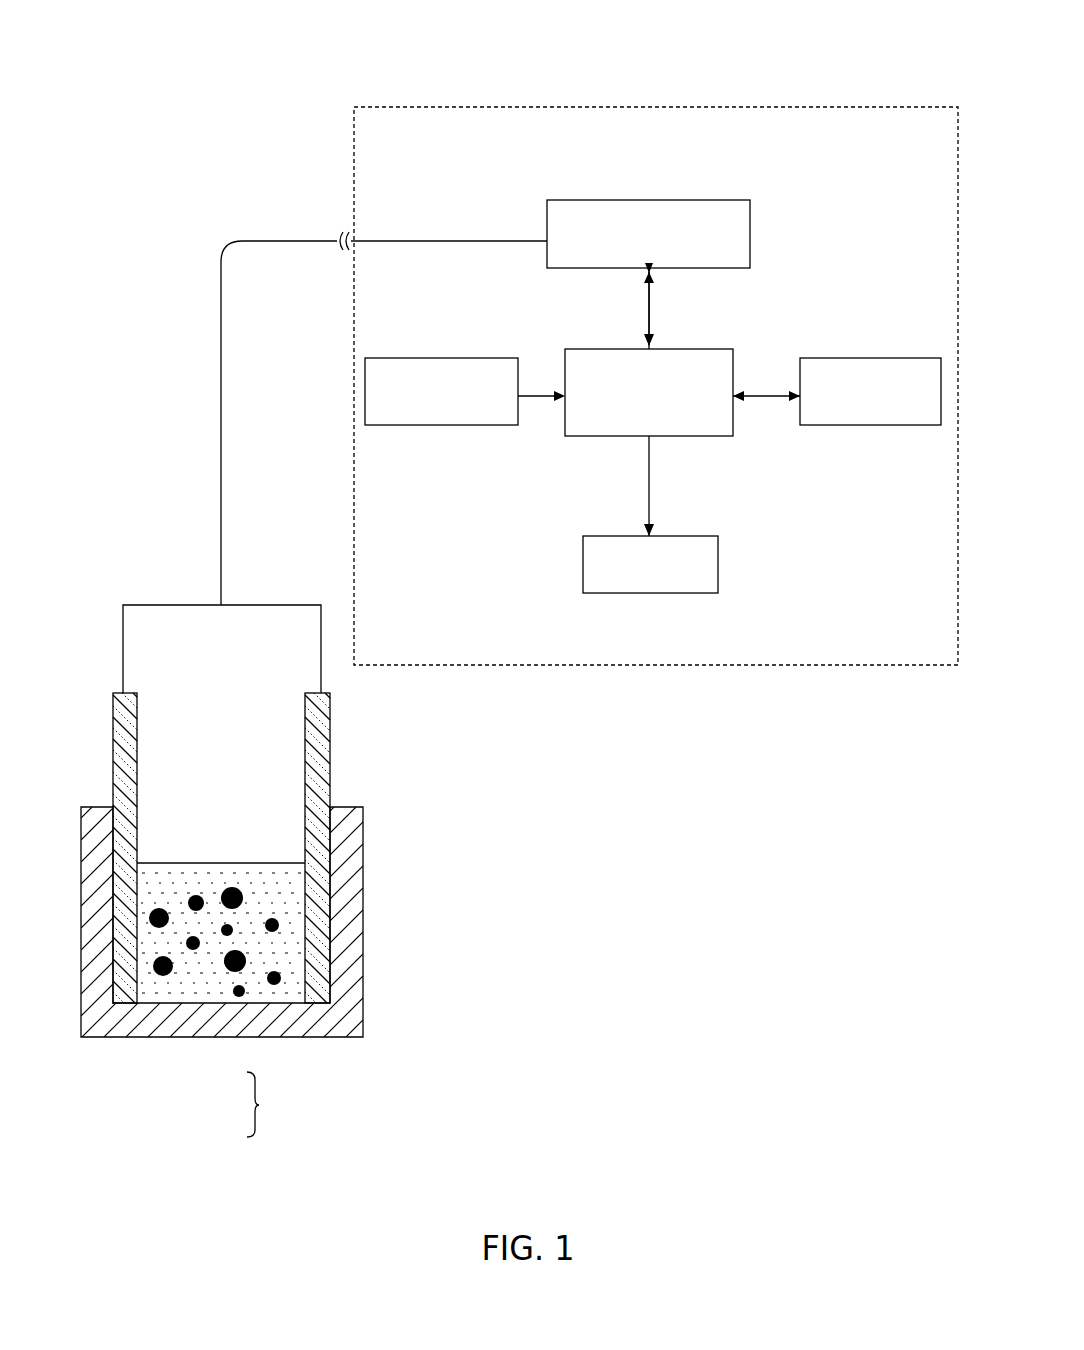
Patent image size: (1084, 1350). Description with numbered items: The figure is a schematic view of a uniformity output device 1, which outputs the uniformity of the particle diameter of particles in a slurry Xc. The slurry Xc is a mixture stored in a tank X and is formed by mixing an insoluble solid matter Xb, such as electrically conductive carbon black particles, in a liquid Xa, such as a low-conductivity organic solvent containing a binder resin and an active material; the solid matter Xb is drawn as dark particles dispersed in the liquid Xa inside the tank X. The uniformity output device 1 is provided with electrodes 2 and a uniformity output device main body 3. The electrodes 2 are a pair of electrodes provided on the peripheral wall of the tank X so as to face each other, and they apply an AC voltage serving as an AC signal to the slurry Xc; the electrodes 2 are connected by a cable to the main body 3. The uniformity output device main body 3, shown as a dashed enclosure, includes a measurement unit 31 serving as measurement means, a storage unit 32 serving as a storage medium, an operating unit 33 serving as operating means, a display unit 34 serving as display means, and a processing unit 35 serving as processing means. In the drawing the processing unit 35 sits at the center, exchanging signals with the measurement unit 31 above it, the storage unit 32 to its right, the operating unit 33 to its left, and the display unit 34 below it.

The uniformity output device 1 is at (208, 114).
The electrodes 2 is at (317, 747).
The uniformity output device main body 3 is at (876, 106).
The measurement unit 31 is at (683, 199).
The storage unit 32 is at (889, 357).
The operating unit 33 is at (475, 357).
The display unit 34 is at (691, 535).
The processing unit 35 is at (713, 348).
The tank X is at (352, 913).
The liquid Xa is at (157, 990).
The solid matter Xb is at (193, 949).
The slurry Xc is at (272, 1104).